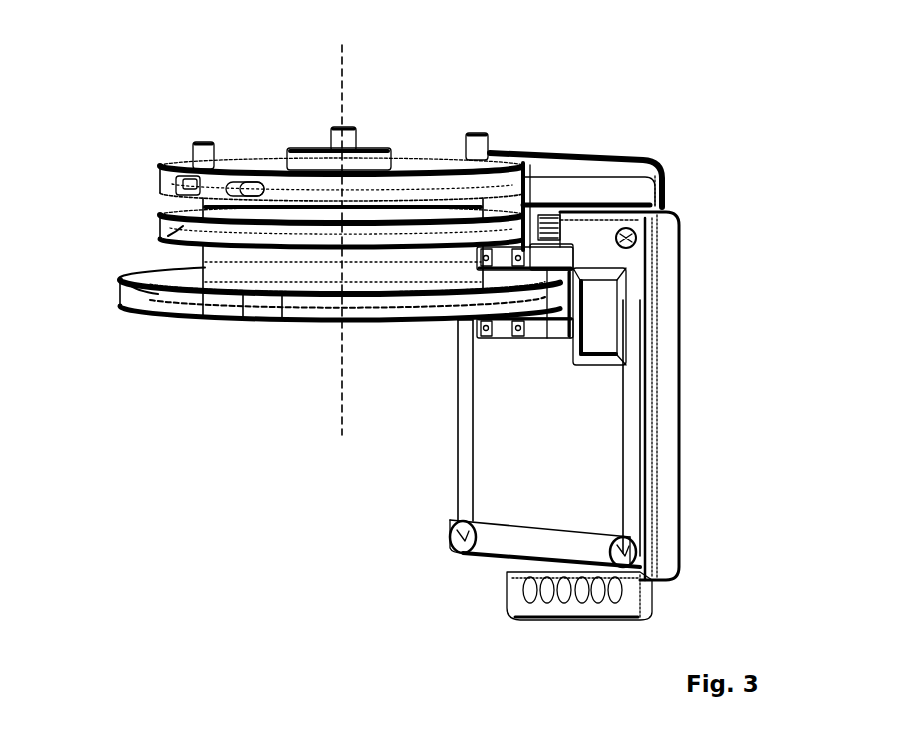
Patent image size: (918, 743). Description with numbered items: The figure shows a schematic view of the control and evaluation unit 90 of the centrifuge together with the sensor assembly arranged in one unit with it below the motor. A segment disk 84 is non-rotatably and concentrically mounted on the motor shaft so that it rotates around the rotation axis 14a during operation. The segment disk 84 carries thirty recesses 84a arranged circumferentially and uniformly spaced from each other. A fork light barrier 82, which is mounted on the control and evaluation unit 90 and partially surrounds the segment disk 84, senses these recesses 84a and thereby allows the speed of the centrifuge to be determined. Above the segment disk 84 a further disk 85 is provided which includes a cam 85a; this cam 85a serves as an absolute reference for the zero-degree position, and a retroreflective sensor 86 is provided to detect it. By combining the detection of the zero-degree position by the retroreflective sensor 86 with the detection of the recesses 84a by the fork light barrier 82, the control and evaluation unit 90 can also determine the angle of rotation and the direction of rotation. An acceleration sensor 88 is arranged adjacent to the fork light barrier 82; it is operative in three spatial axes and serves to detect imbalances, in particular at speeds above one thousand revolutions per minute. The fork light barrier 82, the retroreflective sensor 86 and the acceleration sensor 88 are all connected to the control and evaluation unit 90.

The rotation axis 14a is at (340, 62).
The fork light barrier 82 is at (548, 255).
The segment disk 84 is at (512, 322).
The recesses 84a is at (203, 297).
The disk 85 is at (185, 237).
The cam 85a is at (524, 232).
The retroreflective sensor 86 is at (557, 213).
The acceleration sensor 88 is at (595, 307).
The control and evaluation unit 90 is at (525, 407).